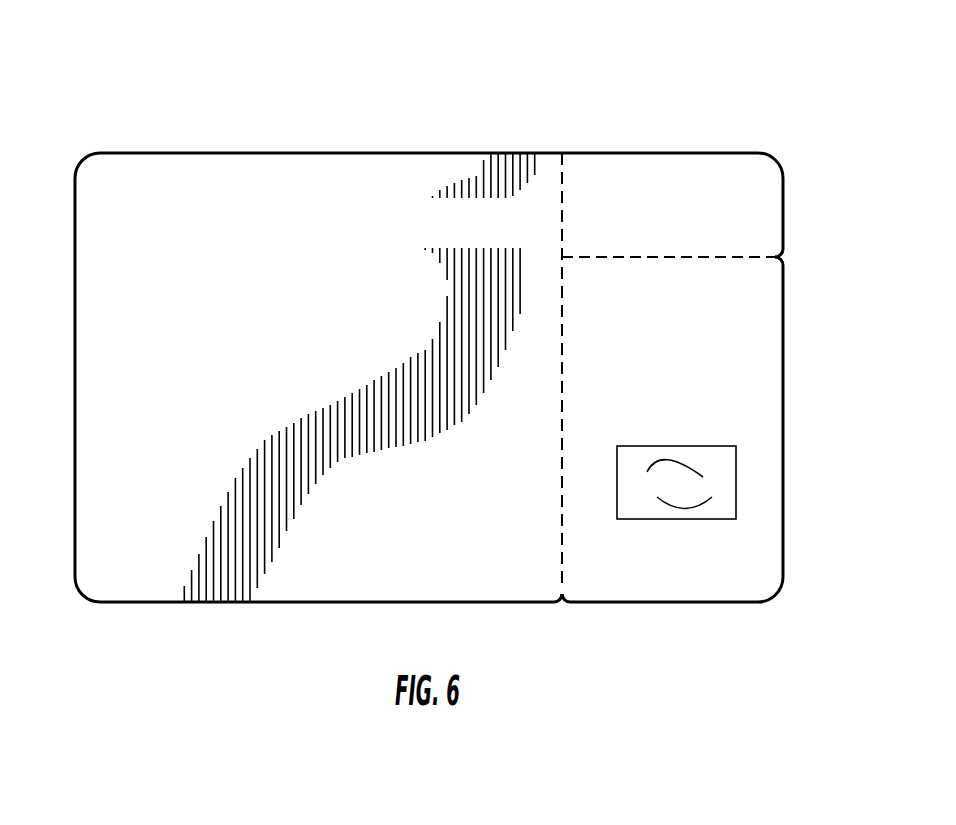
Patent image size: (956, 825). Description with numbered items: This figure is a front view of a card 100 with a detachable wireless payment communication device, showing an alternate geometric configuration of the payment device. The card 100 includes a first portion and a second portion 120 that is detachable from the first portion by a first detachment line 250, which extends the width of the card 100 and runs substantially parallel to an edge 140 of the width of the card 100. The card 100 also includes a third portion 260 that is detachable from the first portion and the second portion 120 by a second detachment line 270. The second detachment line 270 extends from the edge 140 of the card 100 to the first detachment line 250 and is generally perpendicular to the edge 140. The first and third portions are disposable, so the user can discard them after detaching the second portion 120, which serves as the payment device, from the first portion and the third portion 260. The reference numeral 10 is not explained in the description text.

The card 100 is at (508, 108).
The card body 10 is at (100, 375).
The first detachment line 250 is at (560, 512).
The second detachment line 270 is at (684, 257).
The third portion 260 is at (755, 180).
The second portion 120 is at (757, 362).
The edge 140 is at (788, 458).